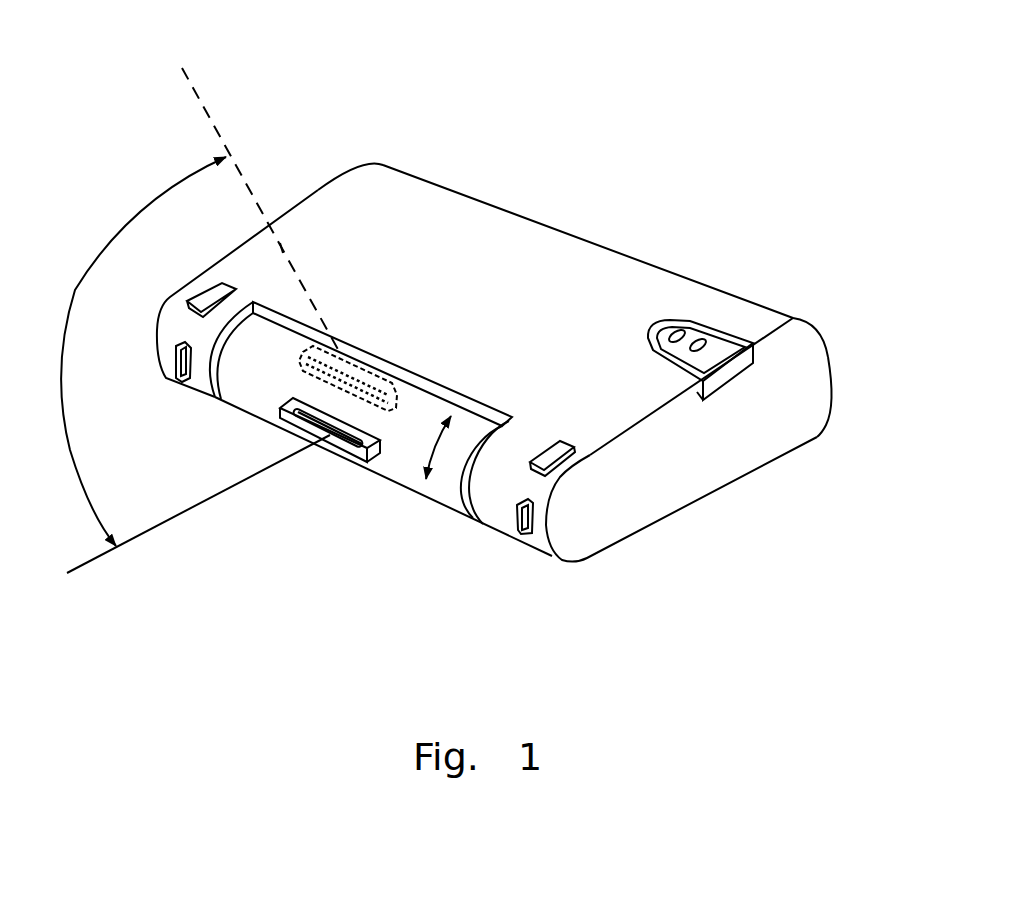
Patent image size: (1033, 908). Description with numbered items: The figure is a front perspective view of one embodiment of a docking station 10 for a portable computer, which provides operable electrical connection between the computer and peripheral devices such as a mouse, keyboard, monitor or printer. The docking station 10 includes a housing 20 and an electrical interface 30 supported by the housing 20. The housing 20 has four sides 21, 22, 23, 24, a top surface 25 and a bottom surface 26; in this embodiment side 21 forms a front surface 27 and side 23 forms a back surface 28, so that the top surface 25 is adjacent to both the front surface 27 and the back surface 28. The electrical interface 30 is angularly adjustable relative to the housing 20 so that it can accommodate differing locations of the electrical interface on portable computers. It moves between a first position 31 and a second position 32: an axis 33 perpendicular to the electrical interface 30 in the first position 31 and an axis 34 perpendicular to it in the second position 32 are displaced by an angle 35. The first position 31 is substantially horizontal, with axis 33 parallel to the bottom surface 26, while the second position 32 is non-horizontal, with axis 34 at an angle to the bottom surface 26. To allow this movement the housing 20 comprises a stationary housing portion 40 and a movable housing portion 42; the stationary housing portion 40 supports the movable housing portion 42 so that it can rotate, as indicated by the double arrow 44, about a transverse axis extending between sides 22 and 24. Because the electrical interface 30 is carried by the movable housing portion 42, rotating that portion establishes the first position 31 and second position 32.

The docking station 10 is at (701, 96).
The housing 20 is at (681, 270).
The side 21 is at (493, 507).
The side 22 is at (717, 467).
The side 23 is at (825, 353).
The side 24 is at (257, 238).
The top surface 25 is at (493, 217).
The bottom surface 26 is at (637, 533).
The front surface 27 is at (538, 535).
The back surface 28 is at (833, 393).
The electrical interface 30 is at (301, 467).
The first position 31 is at (340, 452).
The second position 32 is at (363, 382).
The axis 33 is at (148, 528).
The axis 34 is at (283, 248).
The angle 35 is at (141, 205).
The stationary housing portion 40 is at (542, 287).
The movable housing portion 42 is at (255, 400).
The double arrow 44 is at (437, 441).